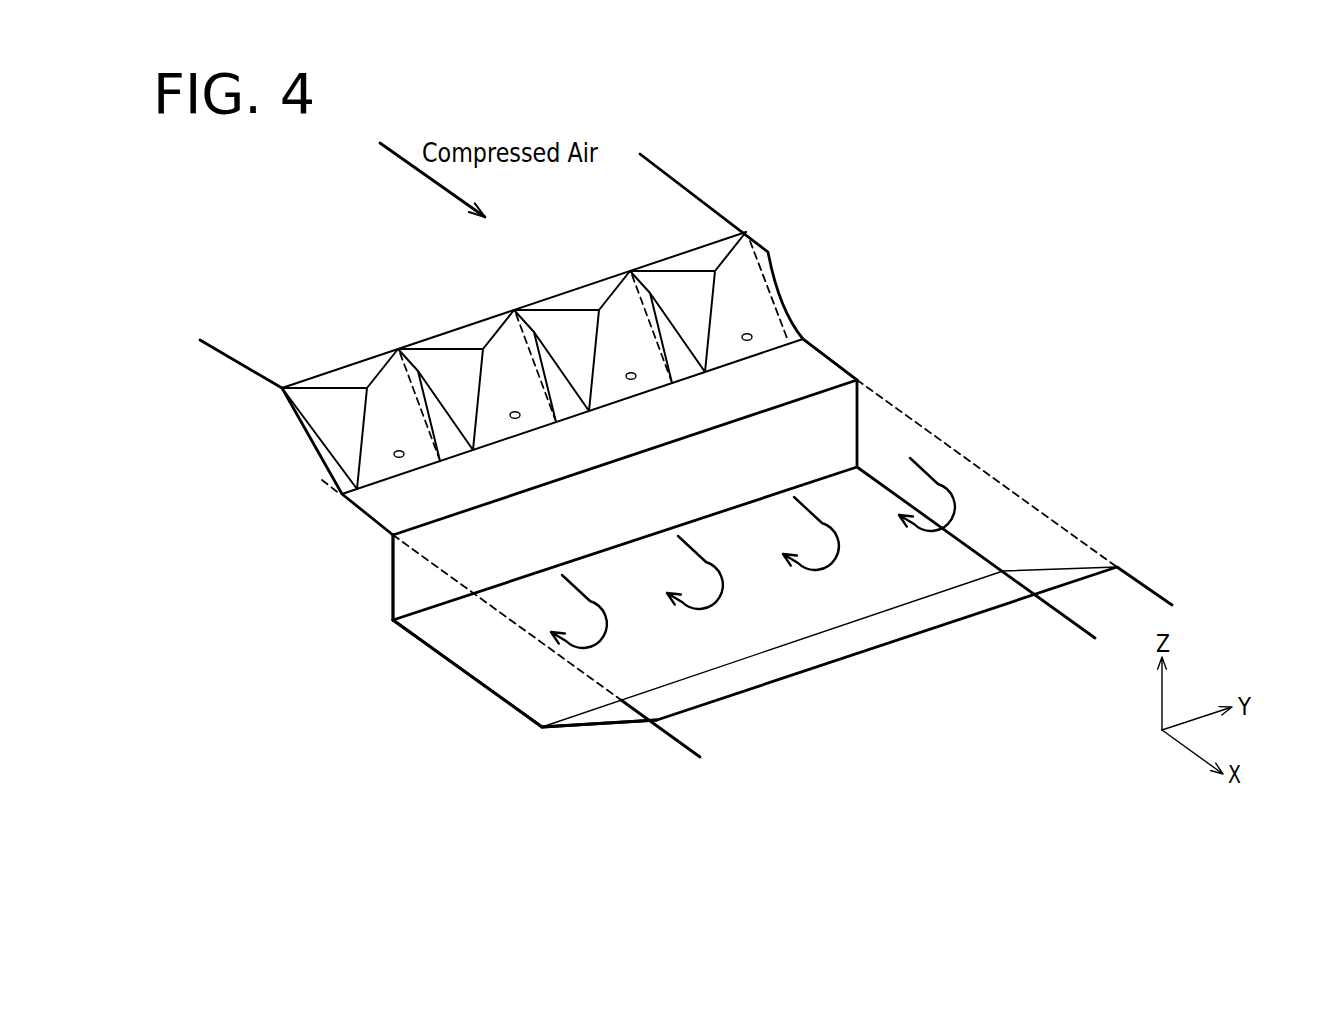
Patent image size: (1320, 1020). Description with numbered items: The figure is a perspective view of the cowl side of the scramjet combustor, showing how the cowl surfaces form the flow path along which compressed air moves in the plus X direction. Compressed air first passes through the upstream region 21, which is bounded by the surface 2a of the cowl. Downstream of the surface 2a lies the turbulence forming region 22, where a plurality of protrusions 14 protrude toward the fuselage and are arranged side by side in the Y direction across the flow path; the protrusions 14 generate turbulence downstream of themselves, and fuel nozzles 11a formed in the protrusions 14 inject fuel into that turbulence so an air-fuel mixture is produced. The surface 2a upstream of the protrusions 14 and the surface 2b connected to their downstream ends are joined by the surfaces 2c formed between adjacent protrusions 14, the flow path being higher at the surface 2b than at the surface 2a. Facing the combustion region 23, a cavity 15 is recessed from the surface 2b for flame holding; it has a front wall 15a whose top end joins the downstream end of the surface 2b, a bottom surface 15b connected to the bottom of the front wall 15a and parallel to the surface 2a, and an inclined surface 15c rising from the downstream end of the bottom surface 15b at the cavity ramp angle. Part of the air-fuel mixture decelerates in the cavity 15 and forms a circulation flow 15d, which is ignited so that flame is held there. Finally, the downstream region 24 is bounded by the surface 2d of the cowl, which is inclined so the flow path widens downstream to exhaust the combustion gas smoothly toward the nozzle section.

The surface (first surface) of the cowl 2a is at (272, 363).
The surface (second surface) of the cowl 2b is at (837, 368).
The surfaces of the cowl between adjacent protrusions 2c is at (450, 446).
The surface of the cowl facing the downstream region 2d is at (700, 738).
The fuel nozzles 11a is at (743, 363).
The protrusion 14 is at (373, 377).
The cavity 15 is at (468, 666).
The front wall 15a is at (402, 579).
The bottom surface 15b is at (537, 710).
The inclined surface 15c is at (608, 718).
The circulation flow 15d is at (588, 588).
The upstream region 21 is at (720, 148).
The turbulence forming region 22 is at (865, 293).
The combustion region 23 is at (1000, 381).
The downstream region 24 is at (1178, 561).